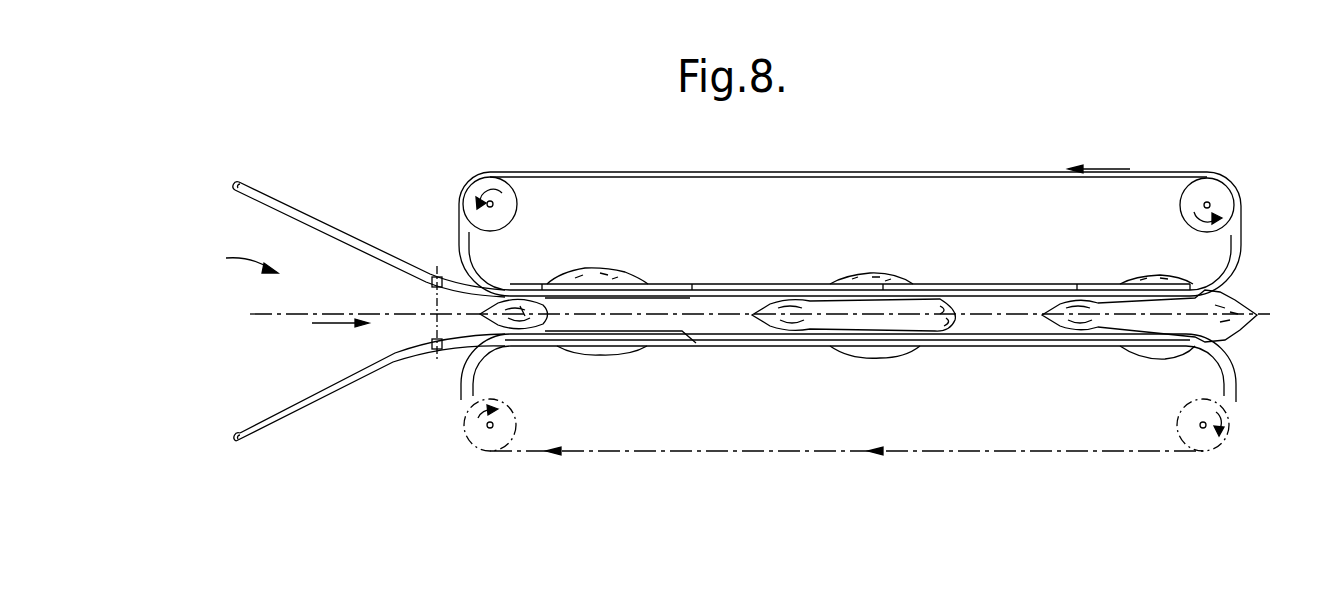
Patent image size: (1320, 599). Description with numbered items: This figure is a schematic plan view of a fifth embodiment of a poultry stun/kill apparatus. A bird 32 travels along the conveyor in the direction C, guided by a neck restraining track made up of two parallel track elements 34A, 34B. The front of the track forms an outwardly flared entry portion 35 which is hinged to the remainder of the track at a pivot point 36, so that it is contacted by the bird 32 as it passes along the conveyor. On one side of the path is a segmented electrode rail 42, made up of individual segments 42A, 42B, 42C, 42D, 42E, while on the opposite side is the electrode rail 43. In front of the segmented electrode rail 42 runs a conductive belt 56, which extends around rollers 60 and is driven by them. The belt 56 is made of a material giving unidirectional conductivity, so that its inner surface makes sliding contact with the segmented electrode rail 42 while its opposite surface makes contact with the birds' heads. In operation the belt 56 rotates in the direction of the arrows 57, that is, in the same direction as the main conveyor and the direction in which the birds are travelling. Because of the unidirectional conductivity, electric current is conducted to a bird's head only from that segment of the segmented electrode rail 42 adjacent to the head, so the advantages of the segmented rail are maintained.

The bird 32 is at (593, 350).
The track element 34A is at (303, 221).
The track element 34B is at (303, 406).
The flared entry portion 35 is at (233, 258).
The pivot point 36 is at (437, 276).
The segmented electrode rail 42 is at (929, 271).
The electrode rail segment 42A is at (513, 284).
The electrode rail segment 42B is at (648, 285).
The electrode rail segment 42C is at (772, 288).
The electrode rail segment 42D is at (983, 288).
The electrode rail segment 42E is at (1110, 290).
The electrode rail 43 is at (716, 346).
The belt 56 is at (752, 171).
The arrows 57 is at (1108, 166).
The rollers 60 is at (481, 183).
The conveying direction C is at (333, 325).